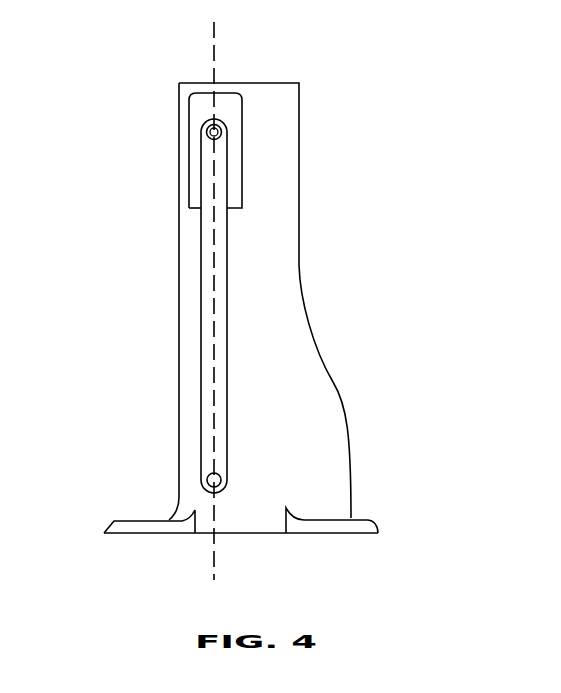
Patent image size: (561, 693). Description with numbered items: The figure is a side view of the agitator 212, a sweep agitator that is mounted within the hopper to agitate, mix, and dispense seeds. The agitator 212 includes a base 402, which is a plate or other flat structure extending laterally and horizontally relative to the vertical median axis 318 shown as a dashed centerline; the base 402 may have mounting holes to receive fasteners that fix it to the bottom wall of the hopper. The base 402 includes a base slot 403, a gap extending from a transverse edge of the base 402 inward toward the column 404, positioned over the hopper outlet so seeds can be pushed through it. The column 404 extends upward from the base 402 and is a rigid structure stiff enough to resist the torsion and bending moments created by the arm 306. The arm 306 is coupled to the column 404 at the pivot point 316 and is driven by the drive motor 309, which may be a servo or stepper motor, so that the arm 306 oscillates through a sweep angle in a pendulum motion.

The agitator 212 is at (365, 177).
The arm 306 is at (209, 332).
The drive motor 309 is at (243, 138).
The pivot point 316 is at (214, 132).
The median axis 318 is at (214, 43).
The base 402 is at (130, 520).
The base slot 403 is at (285, 530).
The column 404 is at (295, 368).